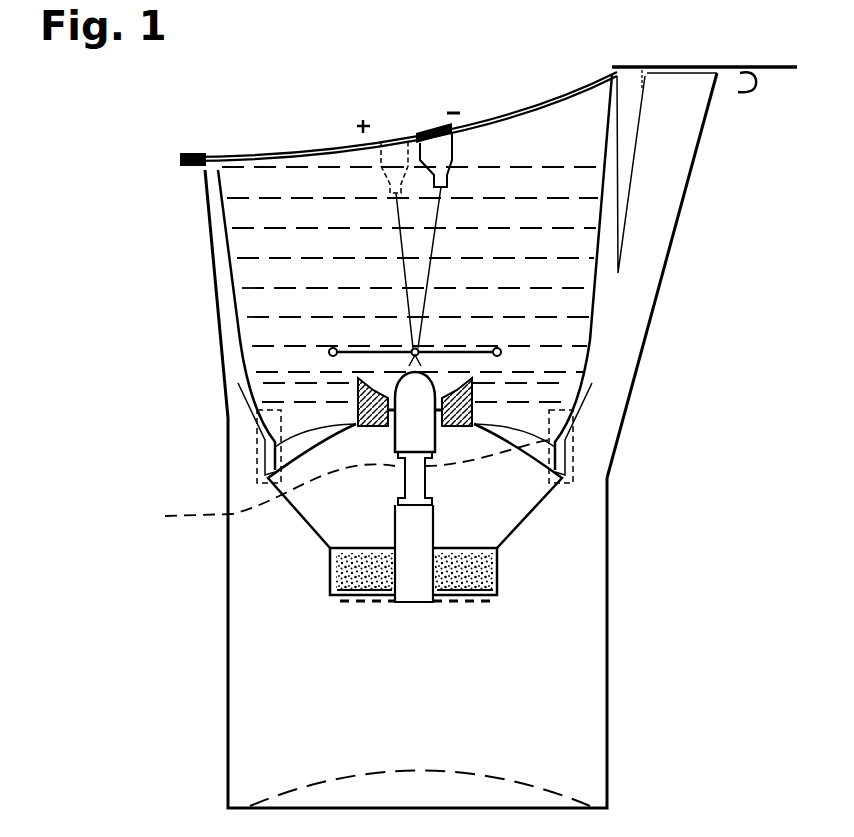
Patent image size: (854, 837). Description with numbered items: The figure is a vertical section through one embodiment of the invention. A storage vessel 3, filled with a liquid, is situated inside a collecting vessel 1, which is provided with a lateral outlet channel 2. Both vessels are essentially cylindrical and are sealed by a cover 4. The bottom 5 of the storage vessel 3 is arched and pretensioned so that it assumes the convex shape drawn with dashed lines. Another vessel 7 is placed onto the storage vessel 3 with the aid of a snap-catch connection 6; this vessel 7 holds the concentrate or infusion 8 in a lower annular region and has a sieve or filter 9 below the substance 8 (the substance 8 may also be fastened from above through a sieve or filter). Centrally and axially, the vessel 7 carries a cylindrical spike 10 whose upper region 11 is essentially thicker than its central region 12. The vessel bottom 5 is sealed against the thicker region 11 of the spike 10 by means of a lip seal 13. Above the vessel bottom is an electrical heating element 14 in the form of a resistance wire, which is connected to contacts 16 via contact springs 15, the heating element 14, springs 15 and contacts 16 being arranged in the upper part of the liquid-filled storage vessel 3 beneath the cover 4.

The collecting vessel 1 is at (607, 716).
The lateral outlet channel 2 is at (672, 157).
The storage vessel 3 is at (233, 272).
The cover 4 is at (513, 106).
The bottom of the storage vessel 5 is at (232, 508).
The snap-catch connection 6 is at (582, 426).
The vessel 7 is at (430, 483).
The concentrate or infusion 8 is at (330, 568).
The sieve or filter 9 is at (352, 605).
The cylindrical spike 10 is at (435, 540).
The upper region of the spike 11 is at (437, 436).
The central region of the spike 12 is at (452, 519).
The lip seal 13 is at (357, 422).
The electrical heating element 14 is at (368, 352).
The contact springs 15 is at (436, 238).
The contacts 16 is at (430, 128).